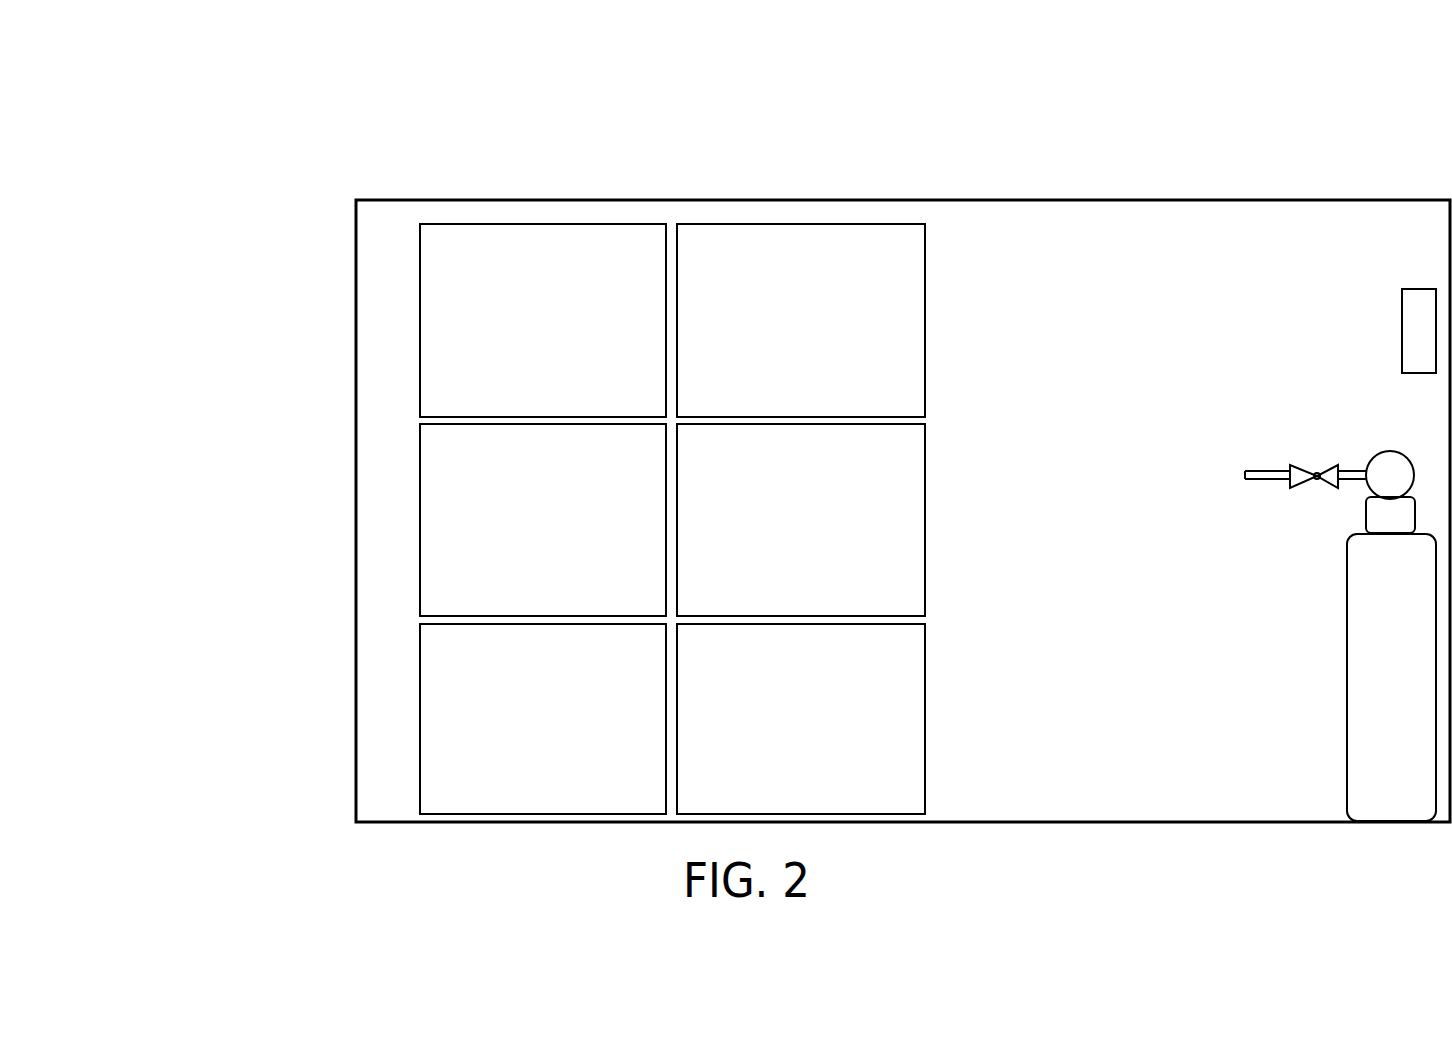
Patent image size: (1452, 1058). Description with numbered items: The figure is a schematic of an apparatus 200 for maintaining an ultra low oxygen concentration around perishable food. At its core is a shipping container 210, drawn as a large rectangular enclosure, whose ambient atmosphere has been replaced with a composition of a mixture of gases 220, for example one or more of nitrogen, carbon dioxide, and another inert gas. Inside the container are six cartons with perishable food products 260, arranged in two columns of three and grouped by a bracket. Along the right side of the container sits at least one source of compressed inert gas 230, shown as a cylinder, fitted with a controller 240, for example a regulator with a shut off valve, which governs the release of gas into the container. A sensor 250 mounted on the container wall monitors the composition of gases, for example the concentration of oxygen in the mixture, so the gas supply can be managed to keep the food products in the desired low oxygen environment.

The apparatus 200 is at (1283, 152).
The shipping container 210 is at (697, 200).
The composition of a mixture of gases 220 is at (392, 340).
The source of compressed inert gas 230 is at (1346, 680).
The controller 240 is at (1390, 451).
The sensor 250 is at (1401, 333).
The cartons with perishable food products 260 is at (932, 815).